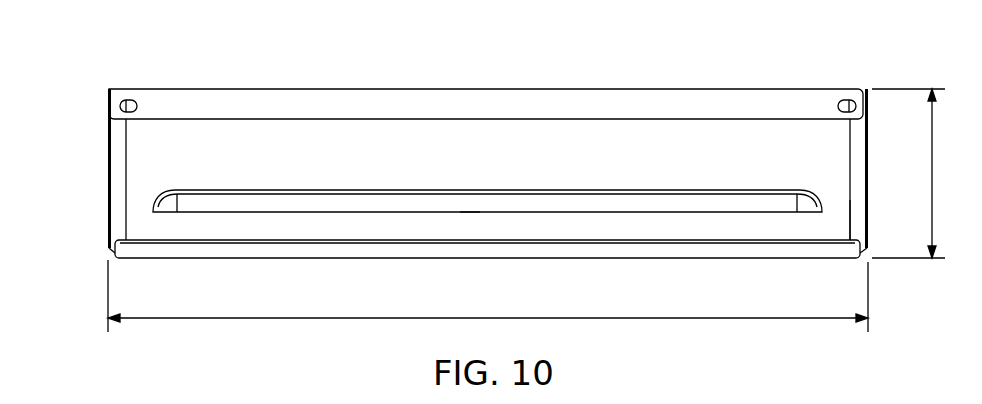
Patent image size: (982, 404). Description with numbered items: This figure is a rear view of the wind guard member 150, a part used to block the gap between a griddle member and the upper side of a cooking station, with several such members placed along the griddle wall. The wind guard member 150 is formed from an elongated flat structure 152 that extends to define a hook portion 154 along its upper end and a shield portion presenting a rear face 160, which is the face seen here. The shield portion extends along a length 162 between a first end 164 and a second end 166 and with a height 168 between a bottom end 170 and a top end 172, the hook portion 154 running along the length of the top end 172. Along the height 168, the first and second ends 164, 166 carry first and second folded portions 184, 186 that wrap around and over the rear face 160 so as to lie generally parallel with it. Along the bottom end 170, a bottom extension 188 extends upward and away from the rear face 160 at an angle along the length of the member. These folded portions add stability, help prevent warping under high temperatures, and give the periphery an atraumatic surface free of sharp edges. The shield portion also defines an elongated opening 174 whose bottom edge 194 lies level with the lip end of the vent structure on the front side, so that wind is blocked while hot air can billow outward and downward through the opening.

The wind guard member 150 is at (79, 91).
The elongated flat structure 152 is at (105, 167).
The hook portion 154 is at (805, 111).
The rear face 160 is at (823, 134).
The length 162 is at (768, 321).
The first end 164 is at (108, 195).
The second end 166 is at (907, 168).
The height 168 is at (932, 190).
The bottom end 170 is at (222, 259).
The top end 172 is at (283, 88).
The elongated opening 174 is at (635, 207).
The first folded portion 184 is at (118, 214).
The second folded portion 186 is at (855, 223).
The bottom extension 188 is at (340, 259).
The bottom edge 194 is at (460, 207).